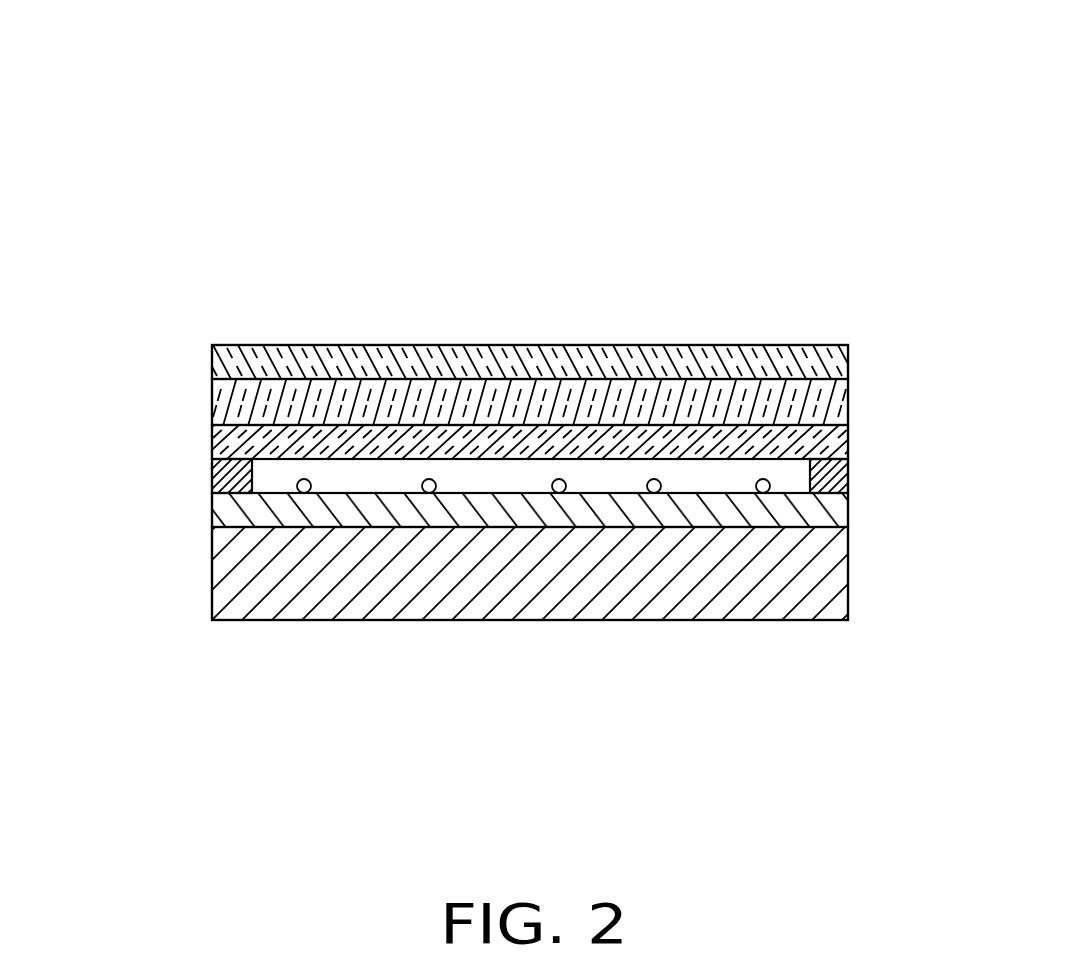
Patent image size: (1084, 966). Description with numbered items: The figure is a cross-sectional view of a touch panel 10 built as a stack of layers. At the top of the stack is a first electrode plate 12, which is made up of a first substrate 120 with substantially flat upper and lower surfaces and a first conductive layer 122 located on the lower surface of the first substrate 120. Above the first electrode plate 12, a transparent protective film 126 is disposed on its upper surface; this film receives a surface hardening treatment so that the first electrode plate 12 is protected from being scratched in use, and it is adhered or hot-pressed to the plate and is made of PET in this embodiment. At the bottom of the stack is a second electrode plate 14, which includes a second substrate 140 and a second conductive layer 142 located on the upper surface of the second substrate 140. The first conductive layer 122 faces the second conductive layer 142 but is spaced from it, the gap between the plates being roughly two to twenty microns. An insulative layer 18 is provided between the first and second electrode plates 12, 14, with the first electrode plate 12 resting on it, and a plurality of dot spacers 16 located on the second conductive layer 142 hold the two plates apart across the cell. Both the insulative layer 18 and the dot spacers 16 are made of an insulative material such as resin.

The touch panel 10 is at (520, 50).
The first electrode plate 12 is at (88, 380).
The transparent protective film 126 is at (212, 356).
The first substrate 120 is at (240, 412).
The first conductive layer 122 is at (240, 447).
The dot spacers 16 is at (296, 489).
The insulative layer 18 is at (838, 475).
The second electrode plate 14 is at (88, 487).
The second conductive layer 142 is at (240, 517).
The second substrate 140 is at (245, 598).